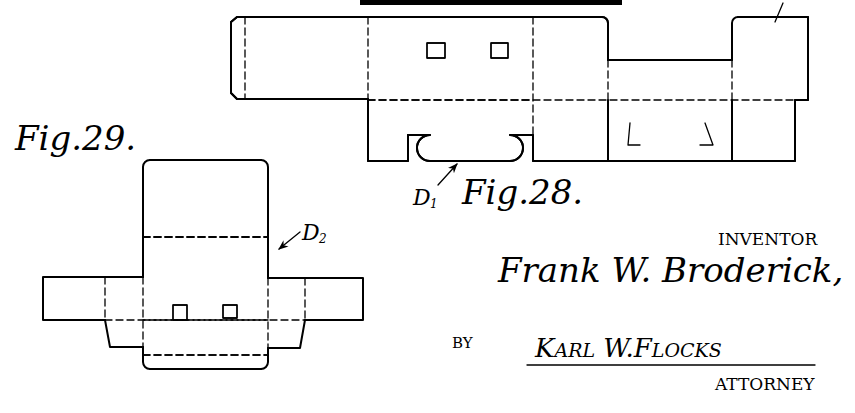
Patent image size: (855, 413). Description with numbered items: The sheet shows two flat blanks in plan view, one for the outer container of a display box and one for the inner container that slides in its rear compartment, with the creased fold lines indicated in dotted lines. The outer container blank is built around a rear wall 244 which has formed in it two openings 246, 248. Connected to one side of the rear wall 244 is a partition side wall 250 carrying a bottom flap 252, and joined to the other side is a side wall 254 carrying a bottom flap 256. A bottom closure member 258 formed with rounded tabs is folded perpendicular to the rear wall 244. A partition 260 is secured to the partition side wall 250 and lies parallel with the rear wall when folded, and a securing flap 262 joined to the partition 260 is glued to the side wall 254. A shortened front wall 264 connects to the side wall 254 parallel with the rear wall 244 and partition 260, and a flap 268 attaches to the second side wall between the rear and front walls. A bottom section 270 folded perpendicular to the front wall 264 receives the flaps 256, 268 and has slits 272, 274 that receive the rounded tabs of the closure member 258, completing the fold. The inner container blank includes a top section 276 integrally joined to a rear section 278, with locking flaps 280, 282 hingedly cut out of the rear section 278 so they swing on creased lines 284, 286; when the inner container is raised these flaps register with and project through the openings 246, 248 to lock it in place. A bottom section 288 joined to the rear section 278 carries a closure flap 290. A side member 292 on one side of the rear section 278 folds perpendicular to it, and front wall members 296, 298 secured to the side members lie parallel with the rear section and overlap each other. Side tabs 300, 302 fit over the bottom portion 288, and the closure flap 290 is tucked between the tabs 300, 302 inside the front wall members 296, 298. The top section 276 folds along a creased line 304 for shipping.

In FIG. 28, the rear wall 244 is at (467, 38).
In FIG. 28, the opening 246 is at (437, 58).
In FIG. 28, the opening 248 is at (498, 58).
In FIG. 28, the partition side wall 250 is at (382, 82).
In FIG. 28, the bottom flap 252 is at (378, 135).
In FIG. 28, the side wall 254 is at (600, 43).
In FIG. 28, the bottom flap 256 is at (597, 145).
In FIG. 28, the bottom closure member 258 is at (436, 147).
In FIG. 28, the partition 260 is at (298, 86).
In FIG. 28, the securing flap 262 is at (237, 67).
In FIG. 28, the shortened front wall 264 is at (692, 67).
In FIG. 28, the flap 268 is at (773, 145).
In FIG. 28, the bottom section 270 is at (697, 152).
In FIG. 28, the slit 272 is at (653, 127).
In FIG. 28, the slit 274 is at (705, 135).
In FIG. 29, the top section 276 is at (155, 190).
In FIG. 29, the rear section 278 is at (150, 248).
In FIG. 29, the locking flap 280 is at (179, 311).
In FIG. 29, the locking flap 282 is at (237, 304).
In FIG. 29, the creased line 284 is at (173, 313).
In FIG. 29, the creased line 286 is at (237, 312).
In FIG. 29, the bottom section 288 is at (252, 342).
In FIG. 29, the closure flap 290 is at (152, 362).
In FIG. 29, the side member 292 is at (118, 283).
In FIG. 29, the front wall member 296 is at (67, 305).
In FIG. 29, the front wall member 298 is at (350, 295).
In FIG. 29, the side tab 300 is at (112, 327).
In FIG. 29, the side tab 302 is at (293, 327).
In FIG. 29, the creased line 304 is at (207, 229).